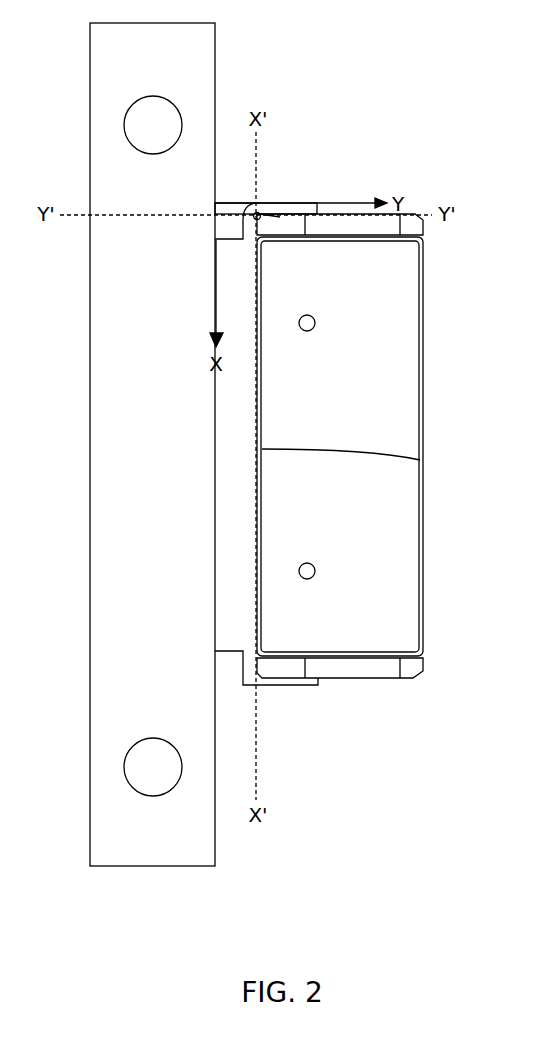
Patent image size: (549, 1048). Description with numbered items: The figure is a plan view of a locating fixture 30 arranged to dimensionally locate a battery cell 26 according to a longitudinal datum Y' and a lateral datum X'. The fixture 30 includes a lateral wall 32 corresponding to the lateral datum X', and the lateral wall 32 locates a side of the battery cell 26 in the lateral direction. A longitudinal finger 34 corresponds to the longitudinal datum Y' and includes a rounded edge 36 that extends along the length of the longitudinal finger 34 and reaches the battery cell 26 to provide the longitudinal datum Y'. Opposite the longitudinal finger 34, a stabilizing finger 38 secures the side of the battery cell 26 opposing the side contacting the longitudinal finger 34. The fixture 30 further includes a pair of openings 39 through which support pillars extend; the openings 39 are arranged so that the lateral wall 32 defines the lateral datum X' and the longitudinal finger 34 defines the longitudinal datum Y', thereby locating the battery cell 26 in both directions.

The battery cell 26 is at (415, 403).
The fixture 30 is at (103, 427).
The lateral wall 32 is at (420, 460).
The longitudinal finger 34 is at (302, 203).
The rounded edge 36 is at (259, 215).
The stabilizing finger 38 is at (292, 683).
The openings 39 is at (141, 121).